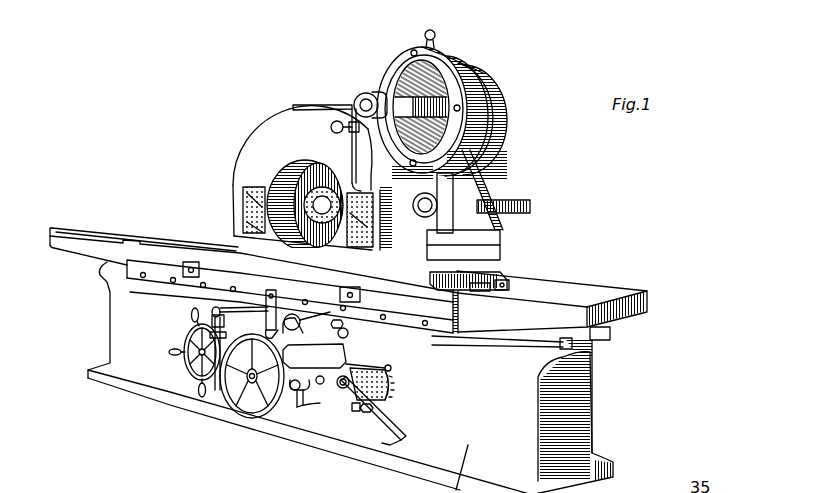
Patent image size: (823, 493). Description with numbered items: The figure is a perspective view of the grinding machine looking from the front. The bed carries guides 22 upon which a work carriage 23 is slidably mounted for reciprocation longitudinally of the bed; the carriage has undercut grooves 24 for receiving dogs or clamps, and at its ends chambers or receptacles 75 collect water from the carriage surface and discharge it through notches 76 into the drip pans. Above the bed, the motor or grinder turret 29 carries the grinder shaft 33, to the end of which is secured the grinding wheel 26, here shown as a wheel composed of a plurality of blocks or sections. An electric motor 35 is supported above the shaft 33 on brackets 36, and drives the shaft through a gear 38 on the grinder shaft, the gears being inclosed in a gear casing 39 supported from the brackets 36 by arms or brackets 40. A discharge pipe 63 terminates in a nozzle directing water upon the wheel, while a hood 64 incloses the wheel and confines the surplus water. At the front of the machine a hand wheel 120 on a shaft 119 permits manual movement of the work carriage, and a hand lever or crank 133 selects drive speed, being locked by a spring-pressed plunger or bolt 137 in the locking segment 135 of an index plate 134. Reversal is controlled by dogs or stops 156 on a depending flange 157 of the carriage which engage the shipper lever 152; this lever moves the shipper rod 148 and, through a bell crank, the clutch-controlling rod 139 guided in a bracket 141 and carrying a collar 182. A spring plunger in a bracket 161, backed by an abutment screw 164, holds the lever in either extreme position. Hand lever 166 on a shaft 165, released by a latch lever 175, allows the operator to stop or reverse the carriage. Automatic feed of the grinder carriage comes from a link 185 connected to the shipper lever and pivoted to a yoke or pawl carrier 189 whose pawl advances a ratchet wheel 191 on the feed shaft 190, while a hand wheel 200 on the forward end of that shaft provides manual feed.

The guides 22 is at (610, 333).
The work carriage 23 is at (470, 310).
The undercut grooves 24 is at (510, 290).
The grinding wheel 26 is at (243, 203).
The motor or grinder turret 29 is at (503, 268).
The grinder shaft 33 is at (280, 158).
The electric motor 35 is at (445, 58).
The brackets 36 is at (480, 187).
The gear 38 is at (510, 190).
The gear casing 39 is at (503, 107).
The arms or brackets 40 is at (532, 209).
The discharge pipe 63 is at (335, 105).
The hood 64 is at (277, 120).
The chambers or receptacles 75 is at (115, 232).
The notches 76 is at (490, 287).
The shaft 119 is at (242, 404).
The hand wheel 120 is at (256, 418).
The hand lever or crank 133 is at (383, 427).
The index plate 134 is at (391, 378).
The locking segment 135 is at (391, 390).
The locking plunger or bolt 137 is at (362, 411).
The rod 139 is at (292, 391).
The bracket 141 is at (318, 390).
The shipper rod 148 is at (258, 348).
The shipper lever 152 is at (276, 300).
The dogs or stops 156 is at (187, 263).
The depending flange 157 is at (452, 322).
The bracket 161 is at (349, 333).
The abutment screw 164 is at (352, 340).
The shaft 165 is at (356, 409).
The hand lever 166 is at (350, 362).
The latch lever 175 is at (391, 366).
The collar 182 is at (307, 397).
The link 185 is at (230, 305).
The yoke or pawl carrier 189 is at (211, 314).
The shaft 190 is at (187, 370).
The ratchet wheel 191 is at (218, 390).
The hand wheel 200 is at (183, 358).